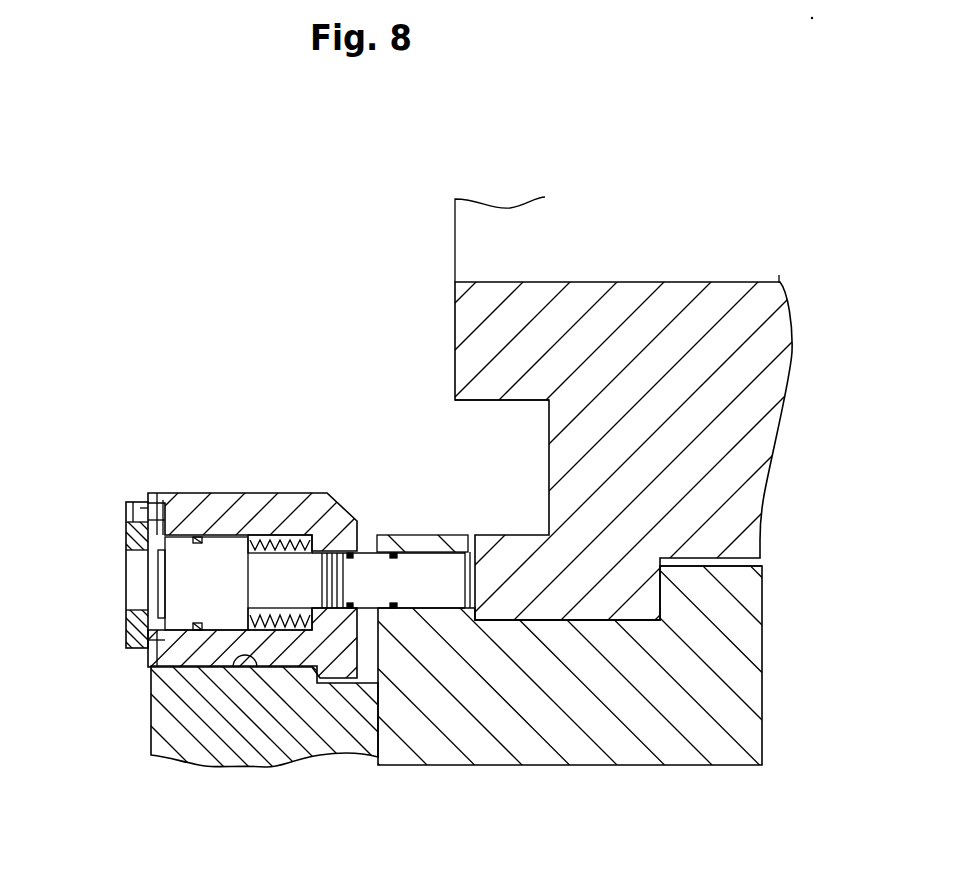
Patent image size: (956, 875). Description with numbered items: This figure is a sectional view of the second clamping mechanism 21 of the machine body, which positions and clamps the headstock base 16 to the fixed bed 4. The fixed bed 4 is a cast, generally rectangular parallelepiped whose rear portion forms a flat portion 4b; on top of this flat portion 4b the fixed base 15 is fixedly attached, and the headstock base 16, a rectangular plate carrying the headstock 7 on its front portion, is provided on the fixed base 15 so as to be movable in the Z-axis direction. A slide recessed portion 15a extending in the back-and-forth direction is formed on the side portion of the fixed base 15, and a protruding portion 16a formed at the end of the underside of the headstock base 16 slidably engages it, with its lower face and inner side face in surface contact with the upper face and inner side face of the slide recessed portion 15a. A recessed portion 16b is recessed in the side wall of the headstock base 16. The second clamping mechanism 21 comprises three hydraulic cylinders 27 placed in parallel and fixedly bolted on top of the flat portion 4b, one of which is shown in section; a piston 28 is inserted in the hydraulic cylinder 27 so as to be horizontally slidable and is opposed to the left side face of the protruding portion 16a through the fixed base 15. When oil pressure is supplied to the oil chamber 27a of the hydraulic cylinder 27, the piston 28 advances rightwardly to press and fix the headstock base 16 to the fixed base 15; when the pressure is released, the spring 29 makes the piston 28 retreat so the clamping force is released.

The fixed bed 4 is at (150, 718).
The flat portion 4b is at (246, 658).
The headstock 7 is at (455, 244).
The fixed base 15 is at (512, 768).
The slide recessed portion 15a is at (600, 612).
The headstock base 16 is at (455, 347).
The protruding portion 16a is at (544, 612).
The recessed portion 16b is at (470, 410).
The second clamping mechanism 21 is at (203, 452).
The hydraulic cylinder 27 is at (285, 493).
The oil chamber 27a is at (126, 542).
The piston 28 is at (223, 553).
The spring 29 is at (305, 535).